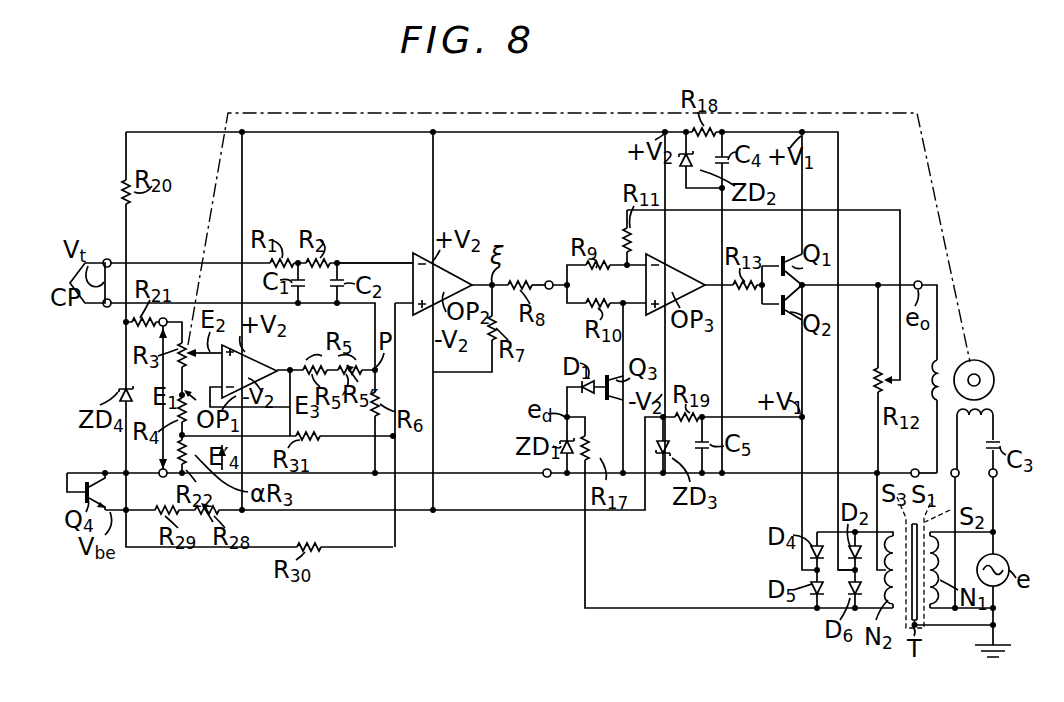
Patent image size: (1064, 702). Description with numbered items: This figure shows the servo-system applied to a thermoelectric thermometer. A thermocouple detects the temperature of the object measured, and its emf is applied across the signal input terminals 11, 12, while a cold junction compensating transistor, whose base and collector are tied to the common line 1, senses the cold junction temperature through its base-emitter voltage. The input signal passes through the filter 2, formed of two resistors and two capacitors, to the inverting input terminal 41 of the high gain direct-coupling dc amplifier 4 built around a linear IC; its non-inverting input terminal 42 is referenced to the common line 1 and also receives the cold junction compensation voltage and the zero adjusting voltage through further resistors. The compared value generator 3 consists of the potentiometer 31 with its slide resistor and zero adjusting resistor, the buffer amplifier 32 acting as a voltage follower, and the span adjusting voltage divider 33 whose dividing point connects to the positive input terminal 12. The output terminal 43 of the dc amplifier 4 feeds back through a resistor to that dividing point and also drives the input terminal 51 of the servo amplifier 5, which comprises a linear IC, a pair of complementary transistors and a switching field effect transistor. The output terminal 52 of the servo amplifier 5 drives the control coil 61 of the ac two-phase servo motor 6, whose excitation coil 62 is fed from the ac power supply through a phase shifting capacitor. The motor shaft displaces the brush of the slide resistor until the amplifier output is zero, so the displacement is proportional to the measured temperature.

The common line 1 is at (762, 476).
The filter 2 is at (340, 232).
The compared value generator 3 is at (118, 432).
The dc amplifier 4 is at (470, 243).
The servo amplifier 5 is at (606, 227).
The ac 2-phase servo motor 6 is at (988, 368).
The signal input terminal 11 is at (107, 259).
The positive input terminal 12 is at (107, 307).
The potentiometer 31 is at (124, 366).
The buffer amplifier 32 is at (253, 365).
The span adjusting voltage divider 33 is at (362, 428).
The inverting input terminal 41 is at (408, 262).
The non-inverting input terminal 42 is at (408, 306).
The output terminal 43 is at (478, 283).
The input terminal 51 is at (548, 280).
The output terminal 52 is at (918, 281).
The control coil 61 is at (931, 380).
The excitation coil 62 is at (990, 409).